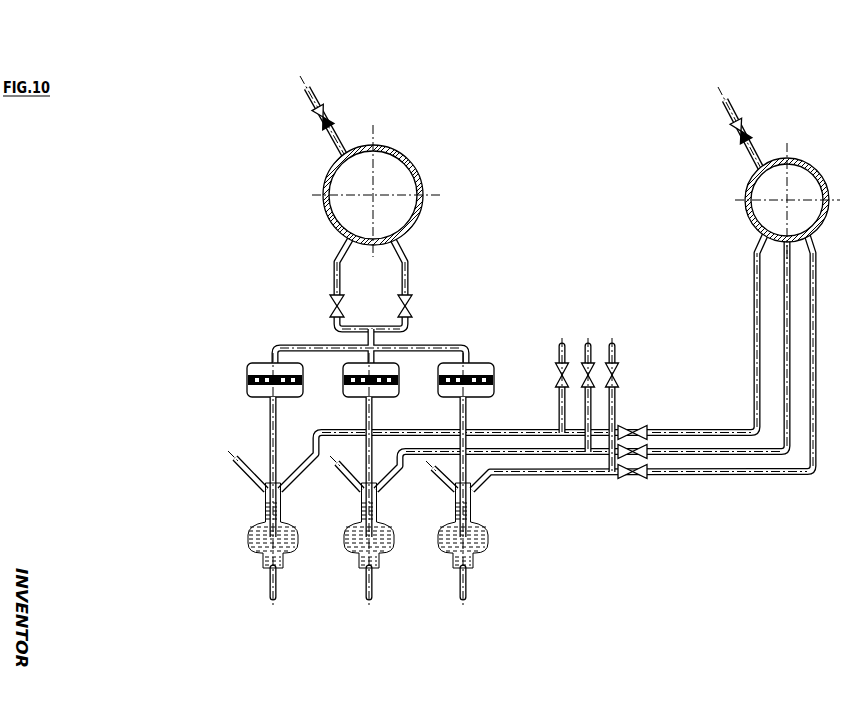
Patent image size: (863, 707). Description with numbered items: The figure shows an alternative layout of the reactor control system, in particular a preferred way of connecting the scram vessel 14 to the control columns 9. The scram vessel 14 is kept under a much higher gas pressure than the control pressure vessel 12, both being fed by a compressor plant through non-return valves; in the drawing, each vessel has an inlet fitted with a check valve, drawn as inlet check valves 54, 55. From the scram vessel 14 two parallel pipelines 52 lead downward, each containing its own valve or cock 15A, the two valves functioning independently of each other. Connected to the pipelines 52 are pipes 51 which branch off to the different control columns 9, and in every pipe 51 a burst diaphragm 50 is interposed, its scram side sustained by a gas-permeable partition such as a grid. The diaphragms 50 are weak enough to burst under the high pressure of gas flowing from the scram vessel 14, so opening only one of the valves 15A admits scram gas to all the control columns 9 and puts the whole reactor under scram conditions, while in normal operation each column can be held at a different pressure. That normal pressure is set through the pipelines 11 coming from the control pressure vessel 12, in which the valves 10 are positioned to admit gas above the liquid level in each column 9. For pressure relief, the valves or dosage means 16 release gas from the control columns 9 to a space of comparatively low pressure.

The control column 9 is at (345, 537).
The valve 10 is at (621, 479).
The pipeline 11 is at (692, 437).
The control pressure vessel 12 is at (807, 173).
The scram vessel 14 is at (392, 157).
The valve or cock 15A is at (402, 294).
The valve or dosage means 16 is at (612, 362).
The burst diaphragm 50 is at (452, 398).
The pipe 51 is at (298, 344).
The parallel pipeline 52 is at (333, 256).
The inlet check valve 54 is at (322, 110).
The inlet check valve 55 is at (744, 123).